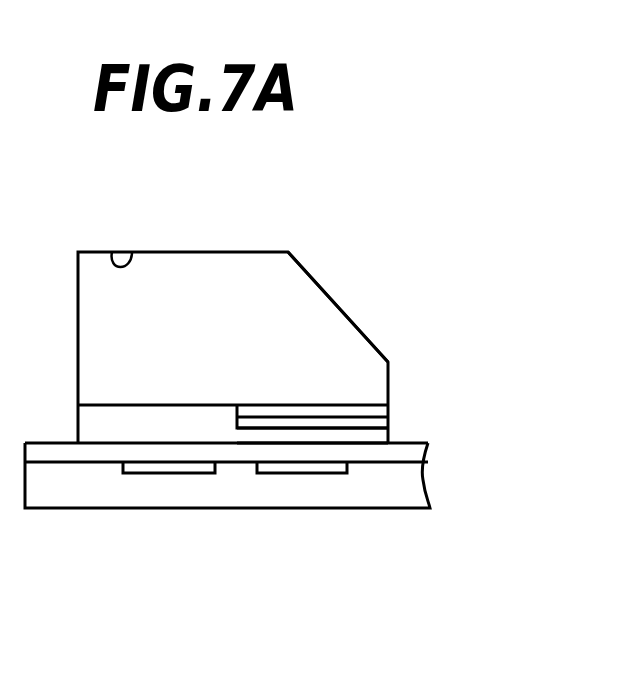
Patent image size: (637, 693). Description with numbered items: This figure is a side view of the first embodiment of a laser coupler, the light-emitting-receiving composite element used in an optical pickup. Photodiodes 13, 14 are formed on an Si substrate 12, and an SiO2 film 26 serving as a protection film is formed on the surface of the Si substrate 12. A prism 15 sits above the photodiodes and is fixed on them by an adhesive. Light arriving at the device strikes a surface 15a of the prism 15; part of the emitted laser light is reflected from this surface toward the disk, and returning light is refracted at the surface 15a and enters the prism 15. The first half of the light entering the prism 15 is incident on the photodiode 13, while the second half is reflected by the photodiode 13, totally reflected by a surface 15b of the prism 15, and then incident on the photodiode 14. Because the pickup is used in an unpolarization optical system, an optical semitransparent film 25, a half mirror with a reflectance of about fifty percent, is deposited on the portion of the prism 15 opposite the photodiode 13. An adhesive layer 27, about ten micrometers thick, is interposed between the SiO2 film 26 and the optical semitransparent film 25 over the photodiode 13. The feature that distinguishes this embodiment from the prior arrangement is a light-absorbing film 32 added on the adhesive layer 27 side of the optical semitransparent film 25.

The prism 15 is at (222, 277).
The surface of the prism 15b is at (112, 252).
The surface of the prism 15a is at (342, 308).
The optical semitransparent film 25 is at (382, 407).
The light-absorbing film 32 is at (382, 418).
The adhesive layer 27 is at (382, 437).
The SiO2 film 26 is at (418, 452).
The Si substrate 12 is at (424, 490).
The photodiode 14 is at (168, 478).
The photodiode 13 is at (300, 478).